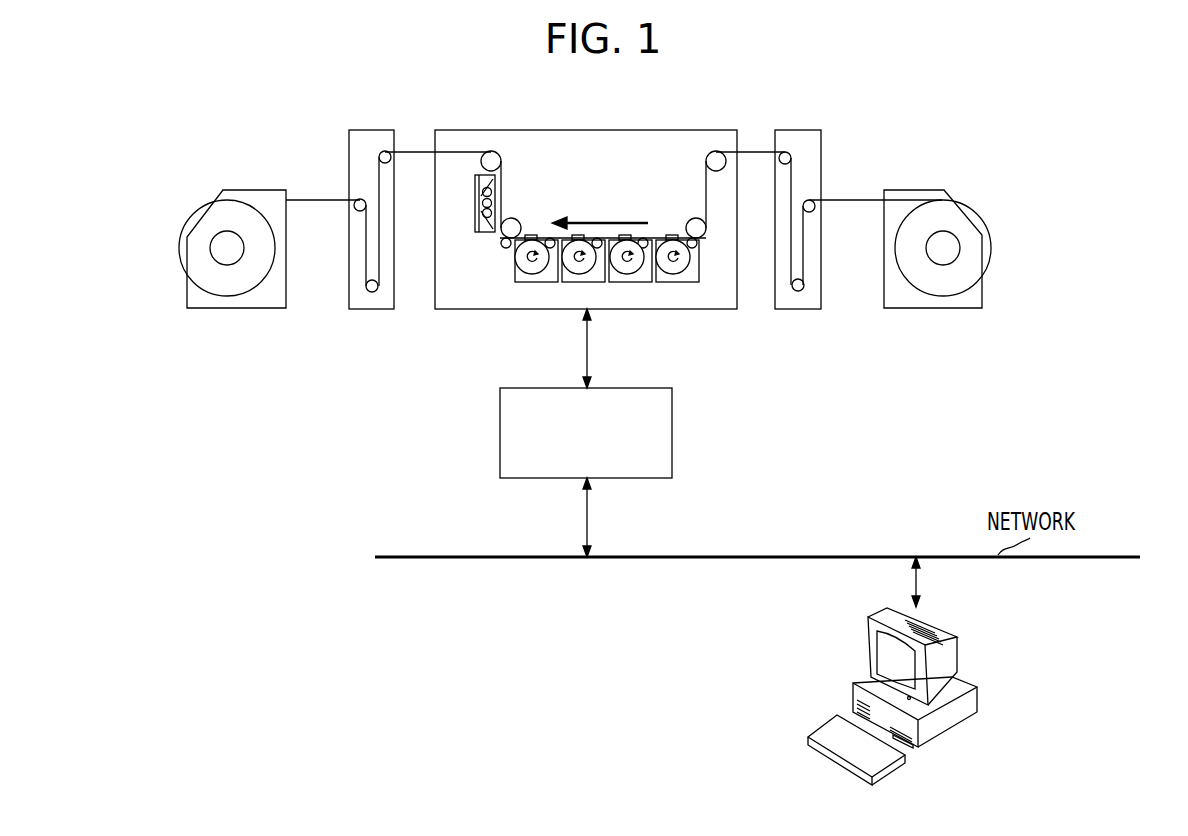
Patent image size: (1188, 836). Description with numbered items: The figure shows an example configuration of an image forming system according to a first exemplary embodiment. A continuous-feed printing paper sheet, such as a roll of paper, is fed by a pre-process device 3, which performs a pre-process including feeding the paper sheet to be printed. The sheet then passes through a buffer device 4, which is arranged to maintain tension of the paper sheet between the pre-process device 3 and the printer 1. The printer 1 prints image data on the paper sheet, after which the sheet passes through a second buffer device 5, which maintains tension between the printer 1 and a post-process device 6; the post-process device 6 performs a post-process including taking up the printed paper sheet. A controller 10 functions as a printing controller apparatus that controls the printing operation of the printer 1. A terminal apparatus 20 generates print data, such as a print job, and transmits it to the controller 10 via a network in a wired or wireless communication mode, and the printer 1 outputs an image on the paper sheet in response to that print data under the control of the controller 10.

The printer 1 is at (586, 128).
The pre-process device 3 is at (917, 190).
The buffer device 4 is at (796, 130).
The buffer device 5 is at (372, 130).
The post-process device 6 is at (250, 190).
The controller 10 is at (645, 388).
The terminal apparatus 20 is at (960, 660).